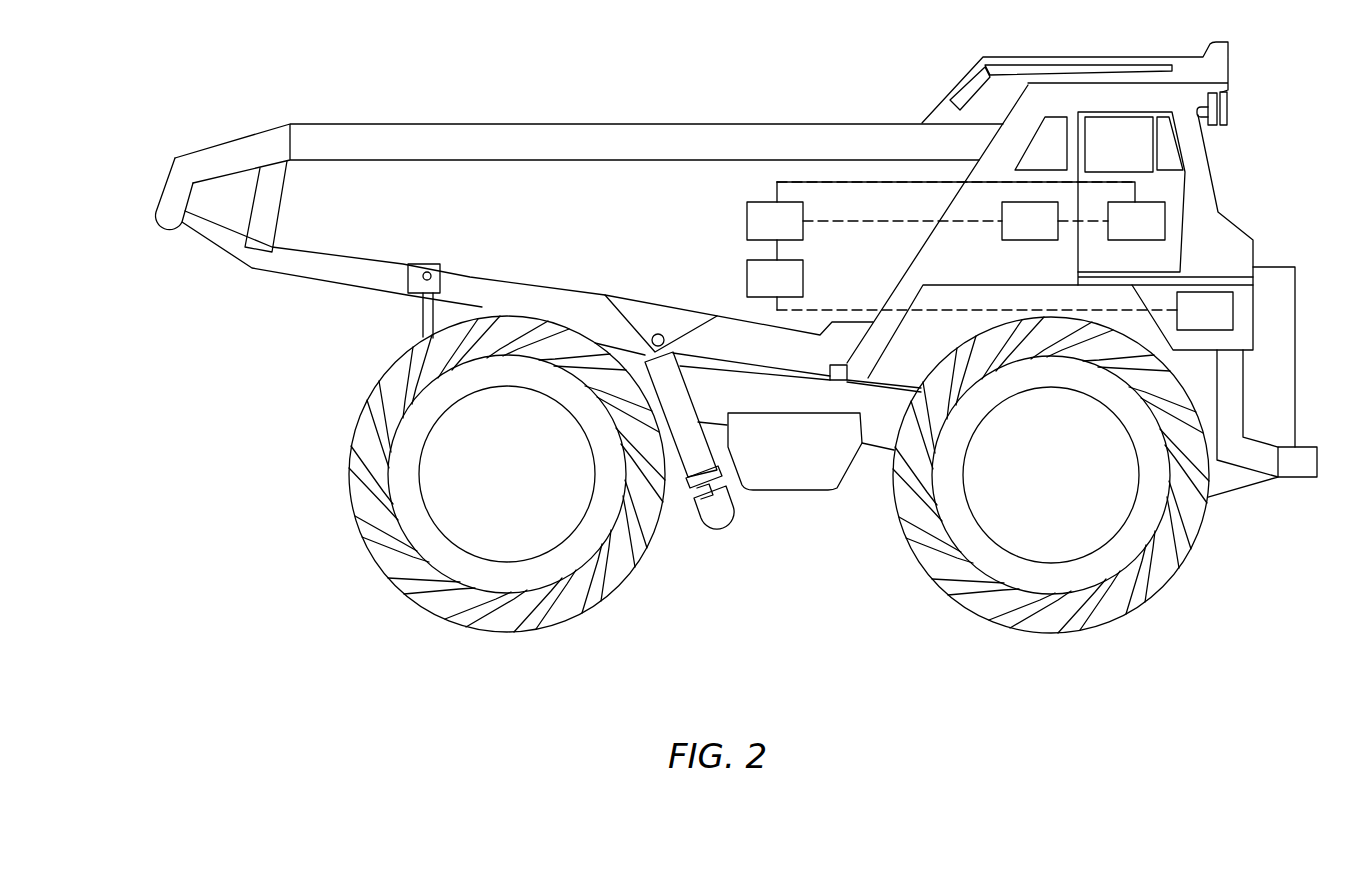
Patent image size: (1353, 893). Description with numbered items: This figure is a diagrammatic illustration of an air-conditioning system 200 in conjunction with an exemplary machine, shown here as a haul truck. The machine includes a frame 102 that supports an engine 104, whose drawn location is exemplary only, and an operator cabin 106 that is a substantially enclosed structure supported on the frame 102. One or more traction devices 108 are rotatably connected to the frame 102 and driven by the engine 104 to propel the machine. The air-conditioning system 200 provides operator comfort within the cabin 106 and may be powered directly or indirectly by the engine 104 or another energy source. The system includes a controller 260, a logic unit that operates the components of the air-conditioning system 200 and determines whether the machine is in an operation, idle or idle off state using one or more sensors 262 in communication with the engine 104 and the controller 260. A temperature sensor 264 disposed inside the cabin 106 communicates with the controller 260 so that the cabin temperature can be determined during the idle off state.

The frame 102 is at (873, 438).
The engine 104 is at (1005, 311).
The cabin 106 is at (1160, 143).
The traction devices 108 is at (500, 545).
The air-conditioning system 200 is at (971, 211).
The controller 260 is at (775, 221).
The sensors 262 is at (775, 285).
The temperature sensor 264 is at (955, 221).